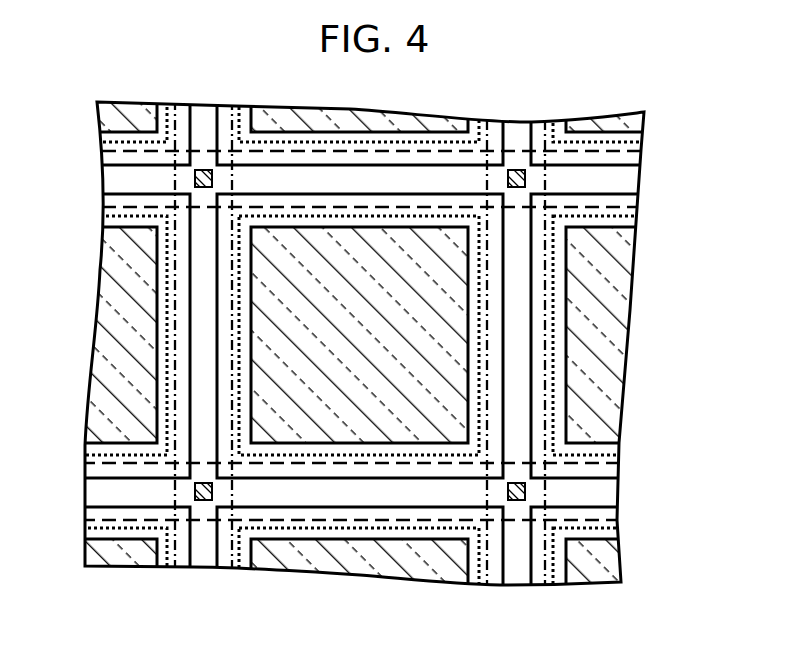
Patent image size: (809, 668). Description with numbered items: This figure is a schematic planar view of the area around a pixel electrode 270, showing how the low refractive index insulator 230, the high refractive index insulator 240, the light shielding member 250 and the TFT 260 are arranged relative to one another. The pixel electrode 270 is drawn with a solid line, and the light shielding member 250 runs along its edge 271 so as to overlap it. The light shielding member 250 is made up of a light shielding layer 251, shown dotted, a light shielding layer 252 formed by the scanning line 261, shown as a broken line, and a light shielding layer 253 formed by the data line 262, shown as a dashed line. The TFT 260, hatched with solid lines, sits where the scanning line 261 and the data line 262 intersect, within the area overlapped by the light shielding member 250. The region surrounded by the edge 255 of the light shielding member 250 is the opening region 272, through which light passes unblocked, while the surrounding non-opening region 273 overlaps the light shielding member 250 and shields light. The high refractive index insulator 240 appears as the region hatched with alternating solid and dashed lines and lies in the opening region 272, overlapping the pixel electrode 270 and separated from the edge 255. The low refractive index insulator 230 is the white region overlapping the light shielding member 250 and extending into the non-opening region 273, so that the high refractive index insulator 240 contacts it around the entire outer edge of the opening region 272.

The low refractive index insulator 230 is at (475, 338).
The high refractive index insulator 240 is at (460, 280).
The light shielding member 250 is at (555, 178).
The light shielding layer 251 is at (82, 454).
The light shielding layer 252 is at (687, 492).
The light shielding layer 253 is at (524, 609).
The edge of light shielding member 255 is at (480, 387).
The TFT 260 is at (193, 490).
The scanning line 261 is at (623, 462).
The data line 262 is at (545, 585).
The pixel electrode 270 is at (307, 472).
The edge of pixel electrode 271 is at (350, 478).
The opening region 272 is at (395, 428).
The non-opening region 273 is at (203, 358).